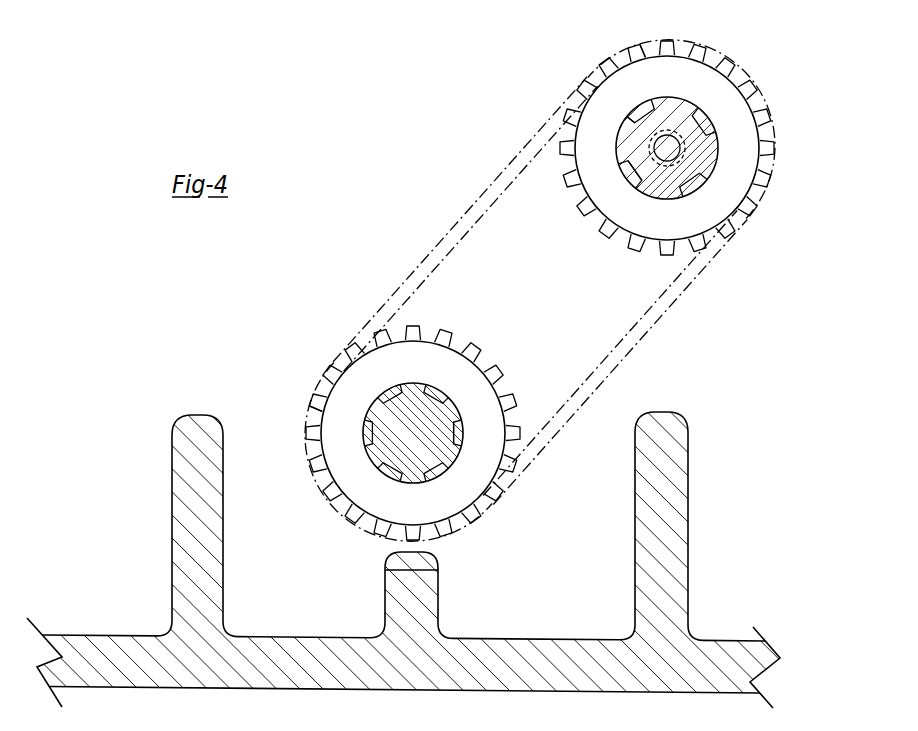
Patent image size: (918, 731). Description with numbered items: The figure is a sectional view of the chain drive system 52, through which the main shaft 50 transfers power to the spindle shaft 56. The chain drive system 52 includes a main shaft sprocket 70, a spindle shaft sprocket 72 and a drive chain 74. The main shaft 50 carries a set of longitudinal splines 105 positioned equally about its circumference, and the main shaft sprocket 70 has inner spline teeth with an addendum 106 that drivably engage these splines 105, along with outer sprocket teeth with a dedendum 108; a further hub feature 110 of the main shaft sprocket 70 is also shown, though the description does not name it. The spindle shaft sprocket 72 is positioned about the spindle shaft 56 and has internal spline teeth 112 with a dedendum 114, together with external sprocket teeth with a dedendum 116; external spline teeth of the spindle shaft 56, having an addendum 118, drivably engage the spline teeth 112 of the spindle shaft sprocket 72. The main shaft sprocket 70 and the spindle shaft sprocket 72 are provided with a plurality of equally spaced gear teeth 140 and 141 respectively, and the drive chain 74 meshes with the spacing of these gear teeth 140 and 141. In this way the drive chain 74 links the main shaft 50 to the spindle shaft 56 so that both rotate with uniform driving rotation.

The chain drive system 52 is at (318, 167).
The main shaft 50 is at (410, 410).
The spindle shaft 56 is at (693, 140).
The main shaft sprocket 70 is at (345, 440).
The spindle shaft sprocket 72 is at (700, 92).
The drive chain 74 is at (657, 322).
The longitudinal splines 105 is at (370, 453).
The addendum of inner spline teeth 106 is at (457, 431).
The dedendum of outer sprocket teeth 108 is at (427, 340).
The hub notch 110 is at (443, 408).
The internal spline teeth 112 is at (620, 160).
The dedendum of internal spline teeth 114 is at (702, 188).
The dedendum of external sprocket teeth 116 is at (758, 131).
The addendum of external spline teeth 118 is at (620, 134).
The gear teeth 140 is at (605, 62).
The gear teeth 141 is at (641, 52).